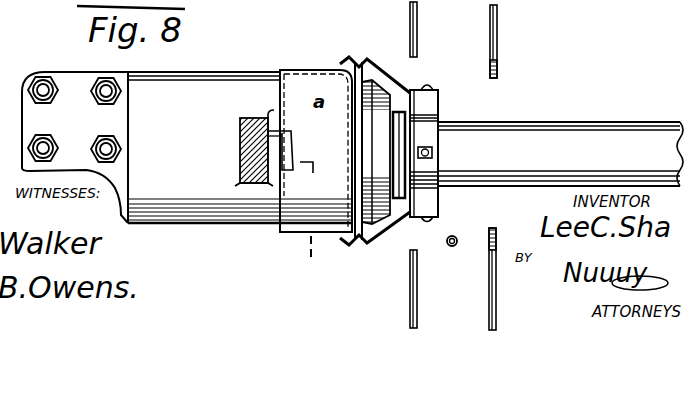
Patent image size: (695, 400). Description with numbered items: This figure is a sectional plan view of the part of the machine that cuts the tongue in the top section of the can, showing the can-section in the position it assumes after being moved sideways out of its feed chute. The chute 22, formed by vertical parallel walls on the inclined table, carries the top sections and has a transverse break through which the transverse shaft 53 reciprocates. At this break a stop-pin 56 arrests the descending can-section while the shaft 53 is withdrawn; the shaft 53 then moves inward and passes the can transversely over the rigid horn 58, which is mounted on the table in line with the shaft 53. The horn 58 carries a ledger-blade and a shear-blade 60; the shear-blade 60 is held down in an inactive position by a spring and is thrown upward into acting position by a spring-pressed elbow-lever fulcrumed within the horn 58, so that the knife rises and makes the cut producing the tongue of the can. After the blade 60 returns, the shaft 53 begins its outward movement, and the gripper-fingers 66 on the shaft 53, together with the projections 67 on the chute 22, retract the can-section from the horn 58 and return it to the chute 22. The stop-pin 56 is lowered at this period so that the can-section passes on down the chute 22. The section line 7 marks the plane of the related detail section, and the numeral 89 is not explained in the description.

The section line 7 is at (311, 265).
The chute 22 is at (498, 27).
The transverse shaft 53 is at (560, 154).
The stop-pin 56 is at (456, 235).
The rigid horn 58 is at (260, 88).
The shear-blade 60 is at (283, 141).
The gripper-fingers 66 is at (390, 79).
The projections 67 is at (498, 64).
The part 89 is at (318, 2).